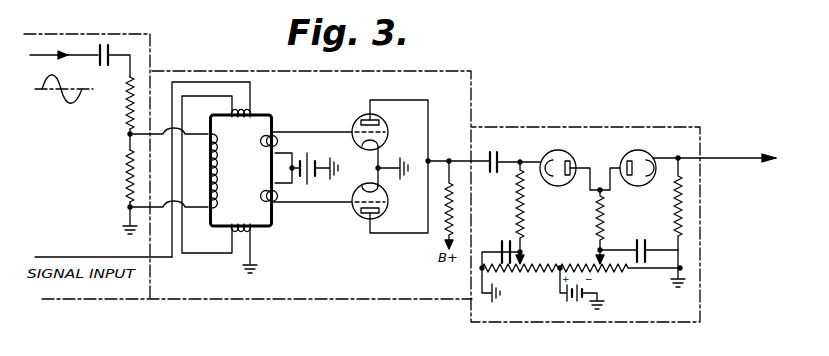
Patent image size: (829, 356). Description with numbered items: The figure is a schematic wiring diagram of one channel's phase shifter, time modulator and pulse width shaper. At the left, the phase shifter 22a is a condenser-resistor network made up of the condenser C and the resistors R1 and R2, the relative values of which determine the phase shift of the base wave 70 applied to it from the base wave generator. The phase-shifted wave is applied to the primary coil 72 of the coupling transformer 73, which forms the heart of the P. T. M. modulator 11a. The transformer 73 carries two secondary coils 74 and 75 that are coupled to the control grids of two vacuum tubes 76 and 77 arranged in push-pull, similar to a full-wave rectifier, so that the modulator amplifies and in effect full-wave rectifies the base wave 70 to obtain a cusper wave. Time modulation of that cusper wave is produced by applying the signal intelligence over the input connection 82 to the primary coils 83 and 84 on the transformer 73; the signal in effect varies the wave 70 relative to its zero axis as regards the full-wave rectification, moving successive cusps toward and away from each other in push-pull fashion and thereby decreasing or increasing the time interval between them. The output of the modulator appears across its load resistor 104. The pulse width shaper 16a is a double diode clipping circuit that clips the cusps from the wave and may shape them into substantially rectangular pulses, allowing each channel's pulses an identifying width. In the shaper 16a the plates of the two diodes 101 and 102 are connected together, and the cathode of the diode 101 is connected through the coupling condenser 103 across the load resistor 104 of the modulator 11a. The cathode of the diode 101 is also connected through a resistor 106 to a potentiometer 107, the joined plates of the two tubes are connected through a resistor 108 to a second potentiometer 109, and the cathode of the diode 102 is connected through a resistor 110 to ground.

The phase shifter 22a is at (148, 52).
The base wave 70 is at (60, 83).
The condenser C is at (114, 49).
The resistor R1 is at (128, 105).
The resistor R2 is at (128, 165).
The input connection 82 is at (90, 257).
The P. T. M. modulator 11a is at (471, 72).
The primary coil 83 is at (231, 112).
The primary coil 84 is at (253, 219).
The coupling transformer 73 is at (274, 114).
The primary coil 72 is at (208, 174).
The secondary coil 74 is at (261, 144).
The secondary coil 75 is at (261, 194).
The vacuum tube 76 is at (360, 120).
The vacuum tube 77 is at (390, 204).
The load resistor 104 is at (456, 206).
The pulse width shaper 16a is at (698, 134).
The coupling condenser 103 is at (504, 152).
The diode 101 is at (558, 150).
The diode 102 is at (637, 150).
The resistor 106 is at (525, 205).
The potentiometer 107 is at (524, 258).
The resistor 108 is at (604, 216).
The second potentiometer 109 is at (600, 263).
The resistor 110 is at (676, 214).